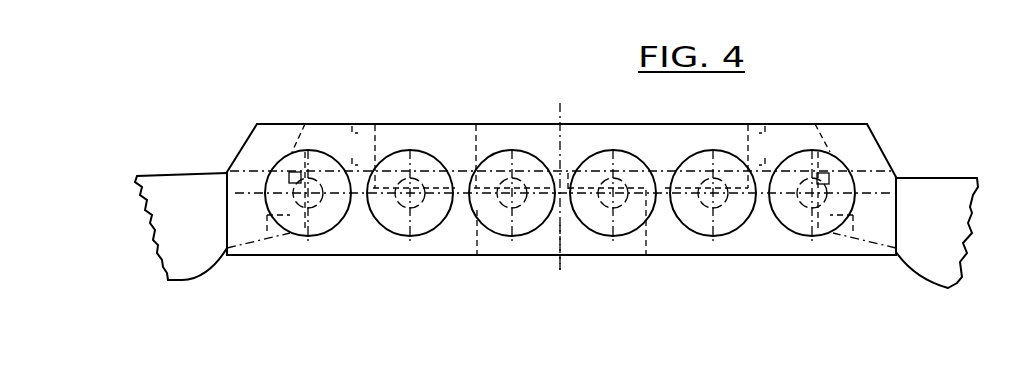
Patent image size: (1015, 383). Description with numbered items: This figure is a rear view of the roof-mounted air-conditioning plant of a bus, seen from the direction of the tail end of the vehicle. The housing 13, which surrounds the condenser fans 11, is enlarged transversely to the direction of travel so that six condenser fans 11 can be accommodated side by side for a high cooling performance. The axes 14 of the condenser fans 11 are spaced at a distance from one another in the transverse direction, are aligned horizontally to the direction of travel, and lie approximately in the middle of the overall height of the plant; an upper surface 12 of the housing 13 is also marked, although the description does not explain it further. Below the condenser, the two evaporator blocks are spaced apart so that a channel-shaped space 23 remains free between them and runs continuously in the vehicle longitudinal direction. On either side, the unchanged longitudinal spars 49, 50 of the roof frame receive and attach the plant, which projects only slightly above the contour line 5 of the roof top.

The contour line of the roof top 5 is at (180, 173).
The condenser fans 11 is at (316, 215).
The upper surface 12 is at (866, 160).
The housing 13 is at (884, 148).
The axes of the condenser fans 14 is at (306, 193).
The channel-shaped space 23 is at (572, 235).
The longitudinal spar of the roof frame 49 is at (293, 152).
The longitudinal spar of the roof frame 50 is at (827, 152).